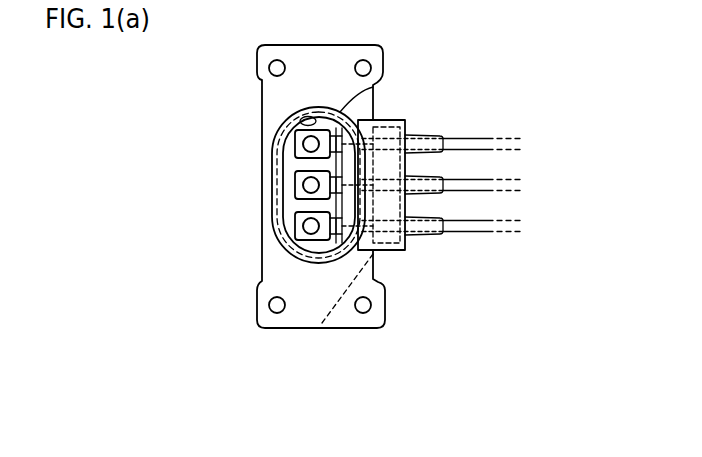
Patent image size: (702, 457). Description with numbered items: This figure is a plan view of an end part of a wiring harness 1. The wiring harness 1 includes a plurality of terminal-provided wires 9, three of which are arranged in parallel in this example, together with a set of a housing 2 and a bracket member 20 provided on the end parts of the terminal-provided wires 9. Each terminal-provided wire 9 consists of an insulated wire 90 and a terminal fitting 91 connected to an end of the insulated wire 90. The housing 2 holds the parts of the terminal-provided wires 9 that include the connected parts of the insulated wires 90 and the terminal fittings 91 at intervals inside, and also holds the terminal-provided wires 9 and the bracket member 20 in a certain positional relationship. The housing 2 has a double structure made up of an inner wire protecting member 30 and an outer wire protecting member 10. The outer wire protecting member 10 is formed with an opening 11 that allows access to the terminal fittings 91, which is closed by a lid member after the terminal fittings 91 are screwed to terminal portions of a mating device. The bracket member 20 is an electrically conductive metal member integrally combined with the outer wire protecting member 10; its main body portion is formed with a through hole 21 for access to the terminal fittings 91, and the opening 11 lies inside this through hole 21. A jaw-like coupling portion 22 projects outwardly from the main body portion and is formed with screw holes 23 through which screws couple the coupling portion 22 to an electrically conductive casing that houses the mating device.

The wiring harness 1 is at (450, 37).
The housing 2 is at (407, 252).
The terminal-provided wire 9 is at (497, 153).
The insulated wire 90 is at (457, 180).
The outer wire protecting member 10 is at (377, 118).
The opening 11 is at (300, 121).
The bracket member 20 is at (261, 261).
The through hole 21 is at (276, 220).
The coupling portion 22 is at (257, 69).
The screw holes 23 is at (275, 312).
The inner wire protecting member 30 is at (336, 244).
The terminal fitting 91 is at (295, 150).